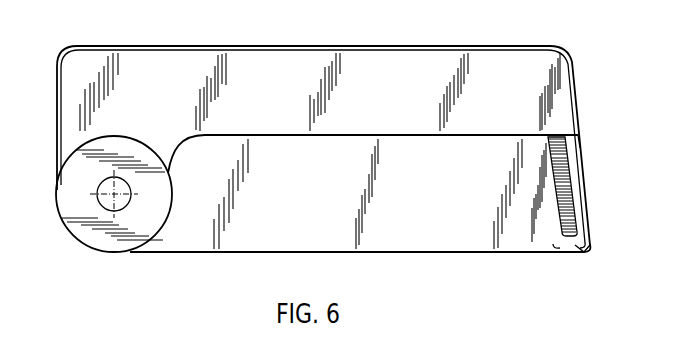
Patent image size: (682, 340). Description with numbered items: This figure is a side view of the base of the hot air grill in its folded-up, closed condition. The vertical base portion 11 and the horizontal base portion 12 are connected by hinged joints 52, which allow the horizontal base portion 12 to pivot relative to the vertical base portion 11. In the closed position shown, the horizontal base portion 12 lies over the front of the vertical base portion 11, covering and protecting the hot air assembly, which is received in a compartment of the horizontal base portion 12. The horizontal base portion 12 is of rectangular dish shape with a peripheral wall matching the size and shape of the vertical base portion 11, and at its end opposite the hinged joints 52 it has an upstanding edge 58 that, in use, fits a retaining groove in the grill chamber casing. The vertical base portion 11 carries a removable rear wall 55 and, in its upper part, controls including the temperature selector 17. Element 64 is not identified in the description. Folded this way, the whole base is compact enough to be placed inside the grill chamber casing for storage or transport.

The vertical base portion 11 is at (593, 250).
The horizontal base portion 12 is at (571, 54).
The temperature selector 17 is at (571, 195).
The hinged joints 52 is at (104, 207).
The rear wall 55 is at (465, 253).
The upstanding edge 58 is at (579, 135).
The shoulder ledge 64 is at (325, 136).